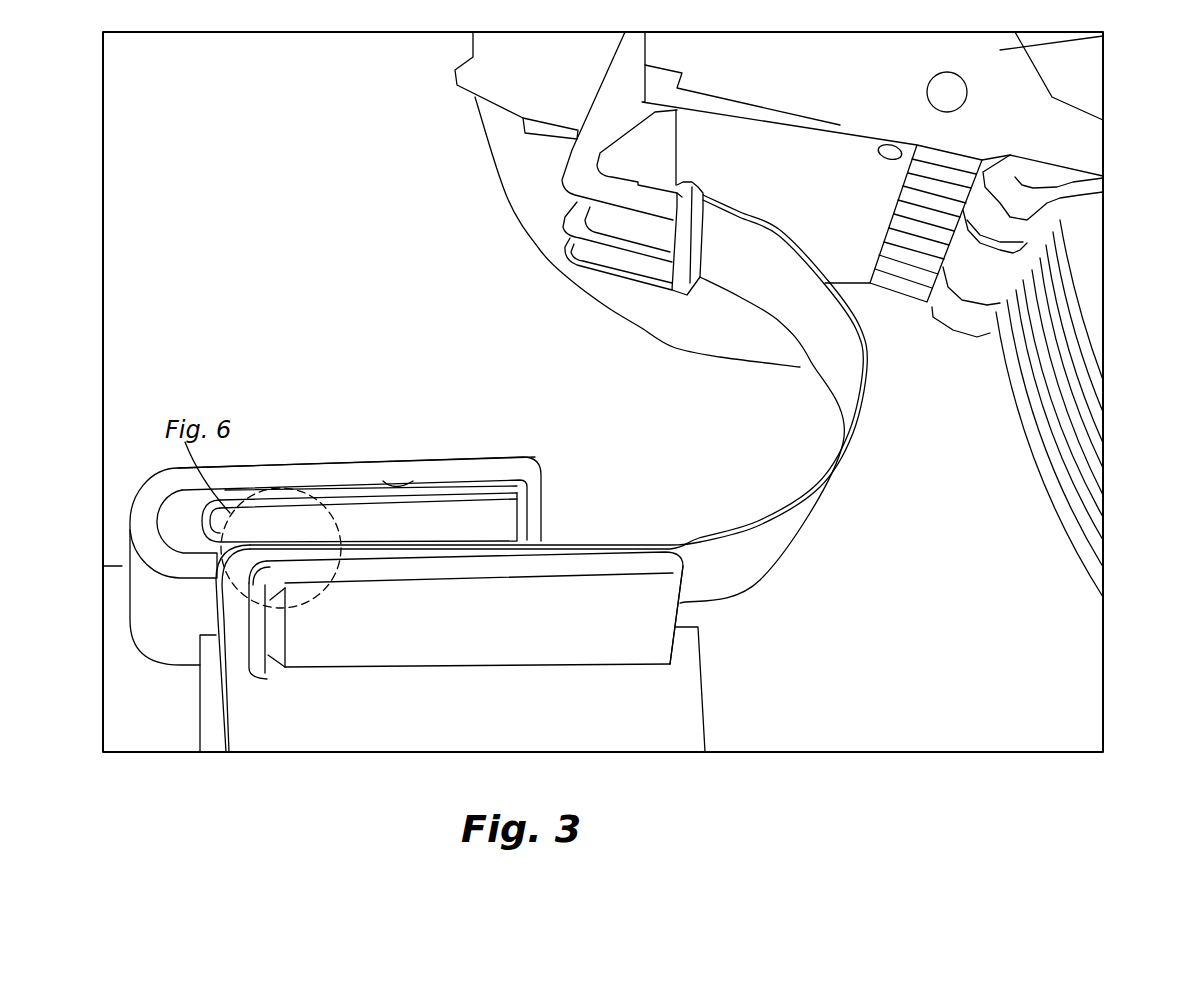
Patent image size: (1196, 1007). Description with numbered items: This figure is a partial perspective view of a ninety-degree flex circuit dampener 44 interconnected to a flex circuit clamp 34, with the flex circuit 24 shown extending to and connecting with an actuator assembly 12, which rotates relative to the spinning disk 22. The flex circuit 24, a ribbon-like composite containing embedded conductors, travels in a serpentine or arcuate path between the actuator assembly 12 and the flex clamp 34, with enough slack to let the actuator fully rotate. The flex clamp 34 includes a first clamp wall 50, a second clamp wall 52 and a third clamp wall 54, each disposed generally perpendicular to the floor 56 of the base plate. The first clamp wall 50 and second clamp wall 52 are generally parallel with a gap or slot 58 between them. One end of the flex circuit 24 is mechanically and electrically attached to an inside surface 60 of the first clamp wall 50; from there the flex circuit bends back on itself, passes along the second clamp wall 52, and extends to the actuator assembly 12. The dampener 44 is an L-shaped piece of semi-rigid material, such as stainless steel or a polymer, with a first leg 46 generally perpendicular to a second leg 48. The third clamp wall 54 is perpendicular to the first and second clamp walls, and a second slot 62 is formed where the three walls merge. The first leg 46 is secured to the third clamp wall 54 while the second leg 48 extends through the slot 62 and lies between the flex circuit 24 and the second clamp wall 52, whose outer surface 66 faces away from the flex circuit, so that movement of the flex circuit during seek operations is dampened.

The actuator assembly 12 is at (840, 73).
The spinning disk 22 is at (1085, 272).
The flex circuit 24 is at (785, 530).
The flex circuit clamp 34 is at (510, 470).
The flex circuit dampener 44 is at (345, 390).
The first leg 46 is at (227, 680).
The second leg 48 is at (385, 565).
The first clamp wall 50 is at (480, 457).
The second clamp wall 52 is at (633, 557).
The third clamp wall 54 is at (215, 737).
The floor 56 is at (813, 713).
The gap or slot 58 is at (357, 520).
The inside surface 60 is at (413, 480).
The second slot or gap 62 is at (209, 587).
The outer surface 66 is at (645, 627).